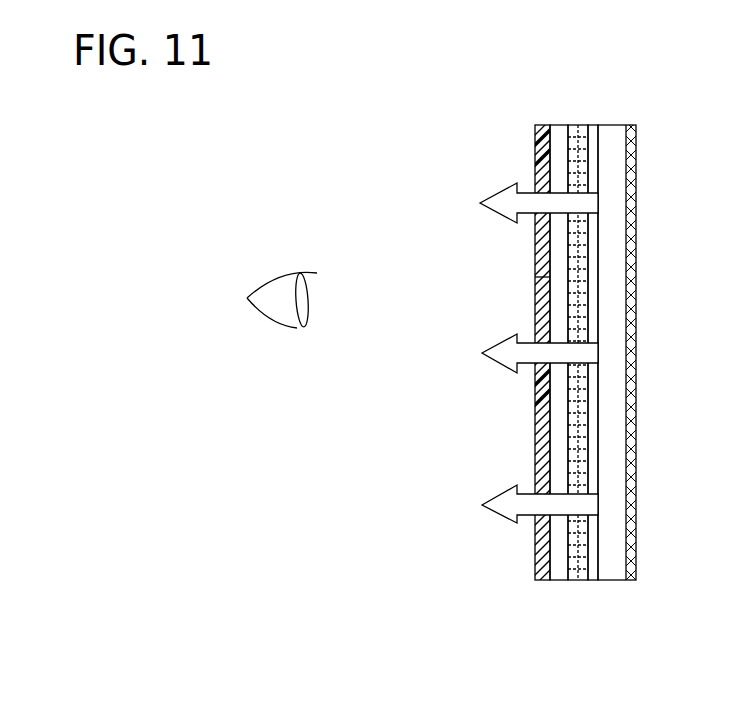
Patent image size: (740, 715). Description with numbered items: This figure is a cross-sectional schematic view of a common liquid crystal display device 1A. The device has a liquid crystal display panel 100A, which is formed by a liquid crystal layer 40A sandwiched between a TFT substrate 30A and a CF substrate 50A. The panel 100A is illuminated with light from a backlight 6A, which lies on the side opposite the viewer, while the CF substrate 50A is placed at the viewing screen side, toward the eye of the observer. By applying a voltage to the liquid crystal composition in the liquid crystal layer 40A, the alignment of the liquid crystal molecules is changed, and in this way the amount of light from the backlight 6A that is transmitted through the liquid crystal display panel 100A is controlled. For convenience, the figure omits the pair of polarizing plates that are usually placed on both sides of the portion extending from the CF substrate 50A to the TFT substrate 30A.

The liquid crystal display device 1A is at (590, 377).
The backlight 6A is at (613, 522).
The TFT substrate 30A is at (611, 389).
The liquid crystal layer 40A is at (558, 570).
The CF substrate 50A is at (533, 581).
The liquid crystal display panel 100A is at (559, 402).